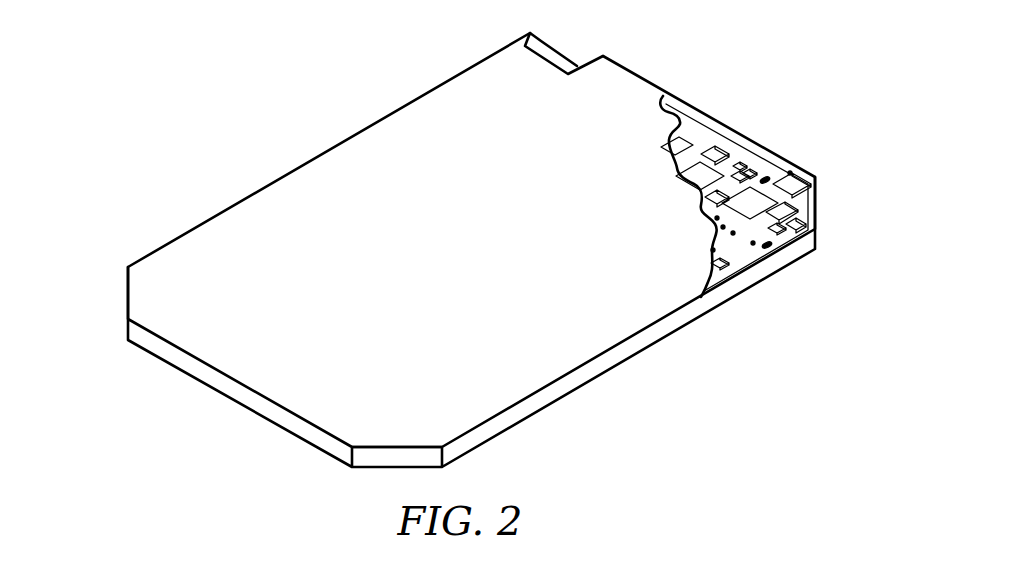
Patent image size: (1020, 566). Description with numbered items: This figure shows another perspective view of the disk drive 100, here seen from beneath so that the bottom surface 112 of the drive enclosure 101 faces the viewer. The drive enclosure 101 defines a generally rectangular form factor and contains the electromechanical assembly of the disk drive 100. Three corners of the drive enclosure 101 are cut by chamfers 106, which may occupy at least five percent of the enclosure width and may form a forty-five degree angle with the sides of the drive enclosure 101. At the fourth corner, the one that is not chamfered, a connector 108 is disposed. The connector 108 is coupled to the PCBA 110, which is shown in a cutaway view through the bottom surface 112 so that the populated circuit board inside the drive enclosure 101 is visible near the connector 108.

The disk drive 100 is at (237, 131).
The drive enclosure 101 is at (630, 71).
The chamfers 106 is at (128, 305).
The connector 108 is at (568, 56).
The PCBA 110 is at (740, 157).
The bottom surface 112 is at (605, 327).